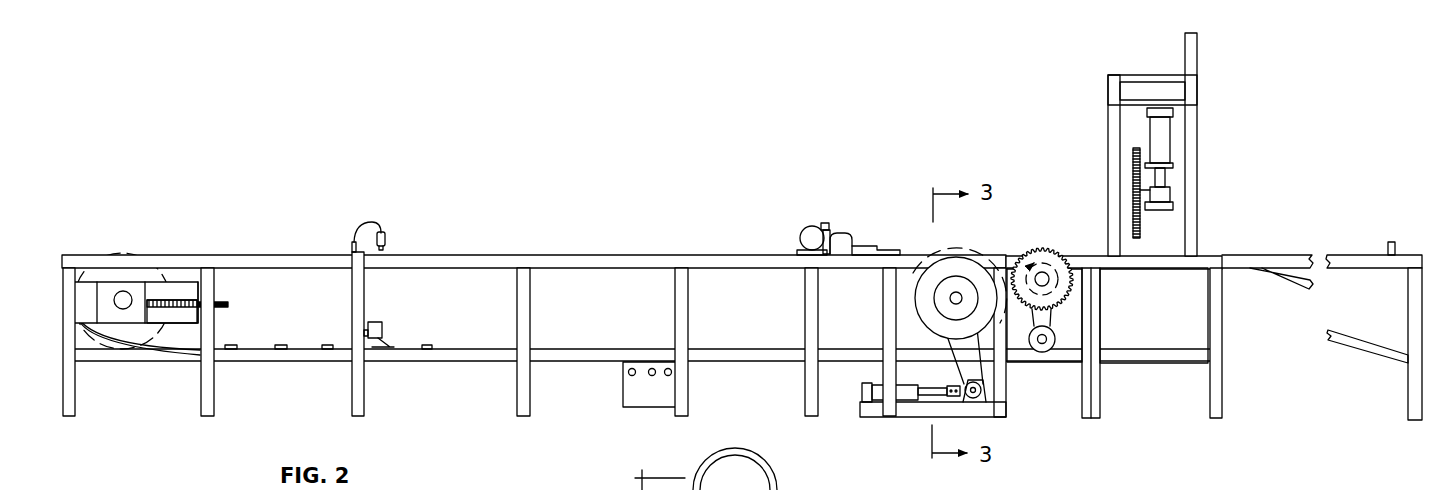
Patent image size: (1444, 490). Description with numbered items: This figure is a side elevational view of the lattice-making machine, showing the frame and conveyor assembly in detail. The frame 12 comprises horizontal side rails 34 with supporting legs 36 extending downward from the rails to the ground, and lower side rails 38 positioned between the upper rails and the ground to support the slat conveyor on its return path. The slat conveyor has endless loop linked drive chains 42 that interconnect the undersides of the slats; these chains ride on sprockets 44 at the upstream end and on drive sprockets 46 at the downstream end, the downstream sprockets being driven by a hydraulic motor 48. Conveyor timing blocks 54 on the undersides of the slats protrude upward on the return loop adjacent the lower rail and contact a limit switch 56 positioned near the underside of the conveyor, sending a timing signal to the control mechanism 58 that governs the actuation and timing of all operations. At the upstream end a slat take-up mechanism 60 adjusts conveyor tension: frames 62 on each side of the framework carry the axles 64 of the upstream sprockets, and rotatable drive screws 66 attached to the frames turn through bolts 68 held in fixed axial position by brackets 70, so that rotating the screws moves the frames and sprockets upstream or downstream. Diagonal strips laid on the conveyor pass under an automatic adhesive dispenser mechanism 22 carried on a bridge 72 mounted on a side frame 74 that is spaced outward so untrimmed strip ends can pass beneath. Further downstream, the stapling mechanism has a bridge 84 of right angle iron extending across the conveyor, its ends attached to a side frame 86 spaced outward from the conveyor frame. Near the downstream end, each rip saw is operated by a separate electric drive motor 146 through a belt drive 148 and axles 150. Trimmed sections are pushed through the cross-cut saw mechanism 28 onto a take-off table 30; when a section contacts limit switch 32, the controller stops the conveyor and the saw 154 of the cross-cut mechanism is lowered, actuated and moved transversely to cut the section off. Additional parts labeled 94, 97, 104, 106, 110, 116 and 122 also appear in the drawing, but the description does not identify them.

In FIG. 2, the frame 12 is at (642, 298).
In FIG. 2, the automatic adhesive dispenser mechanism 22 is at (372, 221).
In FIG. 2, the cross-cut saw mechanism 28 is at (1202, 95).
In FIG. 2, the take-off table 30 is at (1278, 257).
In FIG. 2, the limit switch 32 is at (1393, 242).
In FIG. 2, the horizontal side rails 34 is at (492, 262).
In FIG. 2, the supporting legs 36 is at (530, 325).
In FIG. 2, the lower side rails 38 is at (482, 355).
In FIG. 2, the drive chains 42 is at (130, 350).
In FIG. 2, the sprockets 44 is at (103, 272).
In FIG. 2, the drive sprockets 46 is at (925, 288).
In FIG. 2, the hydraulic motor 48 is at (912, 399).
In FIG. 2, the conveyor timing blocks 54 is at (428, 352).
In FIG. 2, the limit switch 56 is at (383, 328).
In FIG. 2, the control mechanism 58 is at (630, 393).
In FIG. 2, the slat take-up mechanism 60 is at (166, 284).
In FIG. 2, the frames 62 is at (141, 286).
In FIG. 2, the axles 64 is at (125, 289).
In FIG. 2, the rotatable drive screws 66 is at (184, 298).
In FIG. 2, the bolts 68 is at (213, 307).
In FIG. 2, the brackets 70 is at (215, 313).
In FIG. 2, the bridge 72 is at (351, 242).
In FIG. 2, the side frame 74 is at (352, 304).
In FIG. 2, the bridge 84 is at (833, 230).
In FIG. 3, the bridge 84 is at (819, 487).
In FIG. 2, the side frame 86 is at (808, 300).
In FIG. 2, the electric drive motor 146 is at (1050, 341).
In FIG. 2, the belt drive 148 is at (1050, 318).
In FIG. 2, the axles 150 is at (1042, 276).
In FIG. 2, the saw 154 is at (1133, 175).
In FIG. 3, the roller 94 is at (750, 487).
In FIG. 3, the shaft 97 is at (851, 479).
In FIG. 3, the bracket 116 is at (893, 479).
In FIG. 3, the plate 110 is at (942, 482).
In FIG. 3, the arm 122 is at (987, 482).
In FIG. 3, the guide 104 is at (1032, 489).
In FIG. 3, the guide 106 is at (1100, 489).